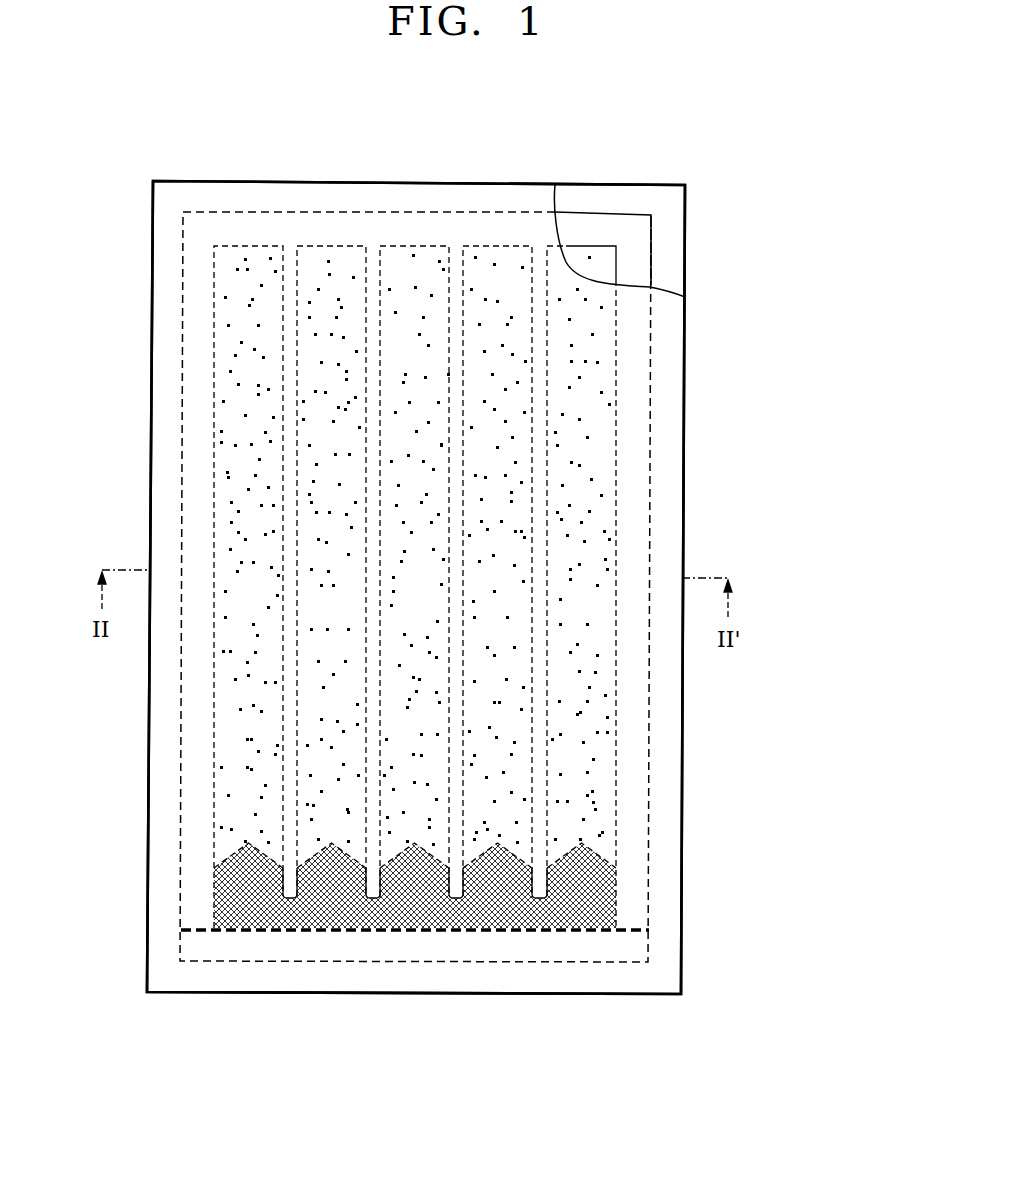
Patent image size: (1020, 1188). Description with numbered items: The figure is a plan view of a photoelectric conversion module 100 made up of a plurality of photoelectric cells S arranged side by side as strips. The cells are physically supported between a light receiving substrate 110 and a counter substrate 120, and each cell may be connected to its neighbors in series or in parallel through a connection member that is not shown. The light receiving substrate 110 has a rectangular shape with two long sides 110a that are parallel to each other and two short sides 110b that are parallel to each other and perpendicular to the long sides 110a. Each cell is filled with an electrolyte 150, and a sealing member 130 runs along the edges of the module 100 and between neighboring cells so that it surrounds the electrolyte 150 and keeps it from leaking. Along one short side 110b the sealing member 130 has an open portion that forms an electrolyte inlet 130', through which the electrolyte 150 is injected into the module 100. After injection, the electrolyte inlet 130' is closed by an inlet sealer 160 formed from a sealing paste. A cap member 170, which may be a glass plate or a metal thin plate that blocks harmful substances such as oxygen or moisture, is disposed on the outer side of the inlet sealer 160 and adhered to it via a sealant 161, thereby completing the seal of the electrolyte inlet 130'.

The photoelectric conversion module 100 is at (661, 171).
The light receiving substrate 110 is at (473, 196).
The long sides 110a is at (152, 312).
The short sides 110b is at (394, 181).
The counter substrate 120 is at (673, 237).
The sealing member 130 is at (667, 410).
The electrolyte inlet 130' is at (233, 980).
The electrolyte 150 is at (593, 405).
The inlet sealer 160 is at (600, 892).
The sealant 161 is at (632, 930).
The cap member 170 is at (635, 948).